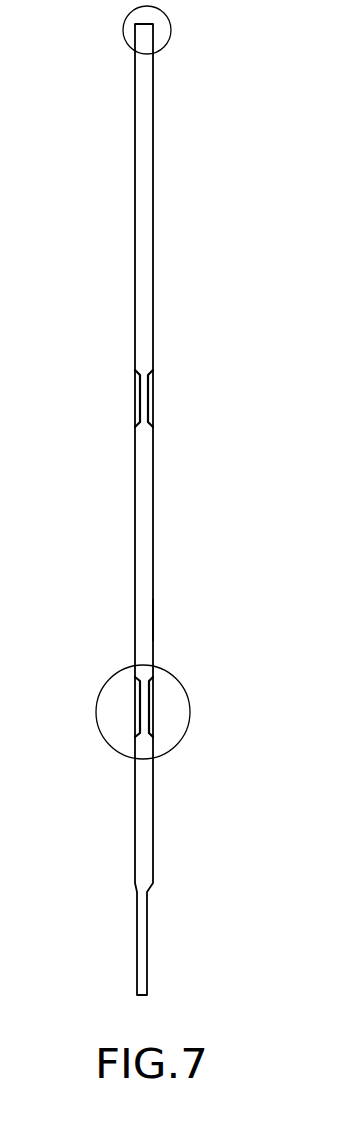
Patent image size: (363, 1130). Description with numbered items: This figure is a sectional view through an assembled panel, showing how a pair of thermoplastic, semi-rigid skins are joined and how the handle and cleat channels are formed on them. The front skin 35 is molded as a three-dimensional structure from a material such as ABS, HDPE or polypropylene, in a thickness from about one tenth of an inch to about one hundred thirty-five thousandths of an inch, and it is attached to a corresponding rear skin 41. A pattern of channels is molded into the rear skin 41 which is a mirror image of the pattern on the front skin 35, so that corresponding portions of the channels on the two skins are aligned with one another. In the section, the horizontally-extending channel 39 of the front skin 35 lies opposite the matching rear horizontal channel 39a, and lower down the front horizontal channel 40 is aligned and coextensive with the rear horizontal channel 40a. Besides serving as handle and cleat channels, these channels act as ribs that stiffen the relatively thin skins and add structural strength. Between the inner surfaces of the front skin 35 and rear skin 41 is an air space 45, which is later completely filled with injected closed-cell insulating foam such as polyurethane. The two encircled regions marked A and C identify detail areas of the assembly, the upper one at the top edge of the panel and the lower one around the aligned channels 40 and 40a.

The front skin 35 is at (134, 607).
The horizontally-extending channel 39 is at (134, 403).
The rear horizontal channel 39a is at (154, 397).
The horizontally-extending channel 40 is at (140, 726).
The rear horizontal channel 40a is at (149, 724).
The rear skin 41 is at (153, 617).
The air space 45 is at (148, 520).
The detail circle A is at (190, 700).
The detail circle C is at (172, 25).